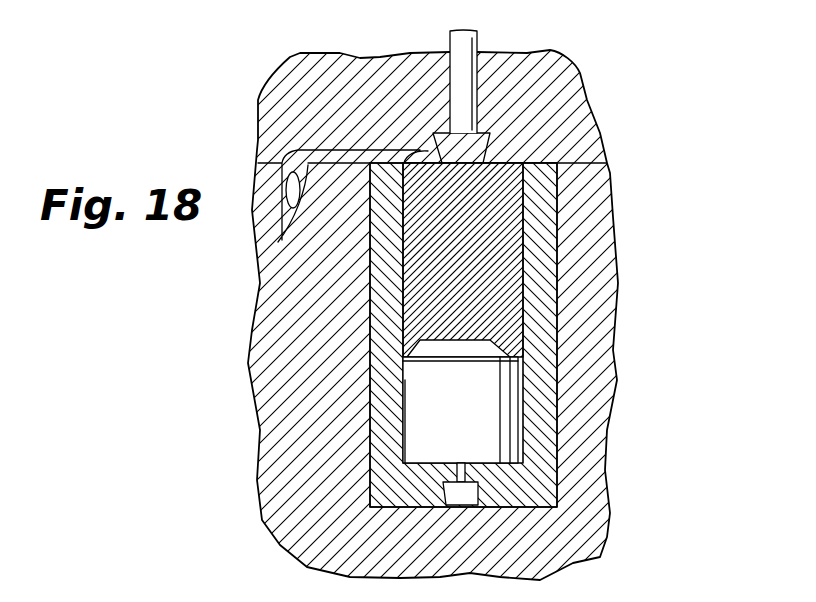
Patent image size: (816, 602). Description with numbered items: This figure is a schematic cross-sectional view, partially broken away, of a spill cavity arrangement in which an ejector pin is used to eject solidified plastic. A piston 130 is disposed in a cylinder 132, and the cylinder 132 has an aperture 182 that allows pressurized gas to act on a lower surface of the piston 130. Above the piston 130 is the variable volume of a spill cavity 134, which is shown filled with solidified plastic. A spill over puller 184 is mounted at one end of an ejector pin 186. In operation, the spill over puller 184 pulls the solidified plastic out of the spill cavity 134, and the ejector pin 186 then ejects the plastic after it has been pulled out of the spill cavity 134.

The ejector pin 186 is at (476, 72).
The spill over puller 184 is at (487, 153).
The spill cavity 134 is at (520, 223).
The piston 130 is at (508, 426).
The cylinder 132 is at (553, 440).
The aperture 182 is at (476, 491).